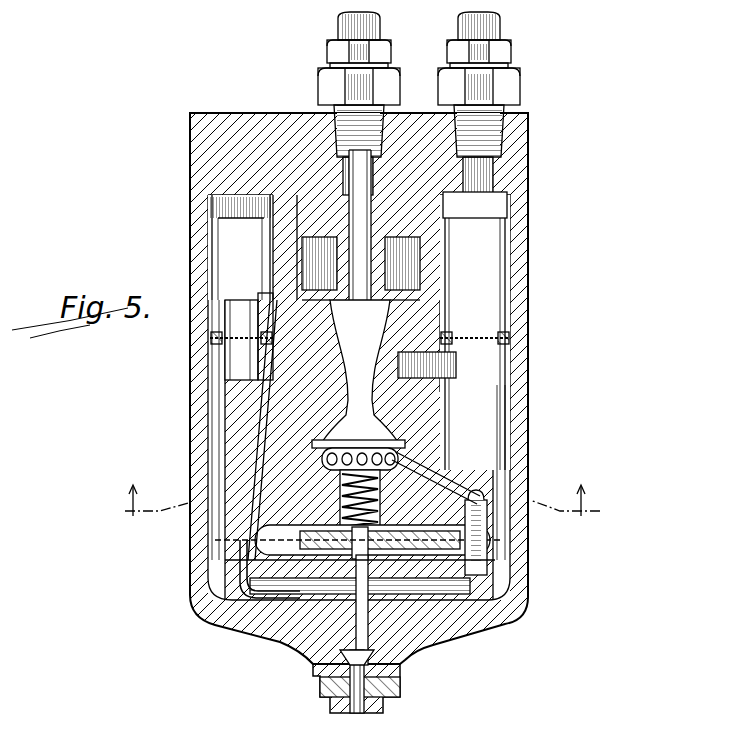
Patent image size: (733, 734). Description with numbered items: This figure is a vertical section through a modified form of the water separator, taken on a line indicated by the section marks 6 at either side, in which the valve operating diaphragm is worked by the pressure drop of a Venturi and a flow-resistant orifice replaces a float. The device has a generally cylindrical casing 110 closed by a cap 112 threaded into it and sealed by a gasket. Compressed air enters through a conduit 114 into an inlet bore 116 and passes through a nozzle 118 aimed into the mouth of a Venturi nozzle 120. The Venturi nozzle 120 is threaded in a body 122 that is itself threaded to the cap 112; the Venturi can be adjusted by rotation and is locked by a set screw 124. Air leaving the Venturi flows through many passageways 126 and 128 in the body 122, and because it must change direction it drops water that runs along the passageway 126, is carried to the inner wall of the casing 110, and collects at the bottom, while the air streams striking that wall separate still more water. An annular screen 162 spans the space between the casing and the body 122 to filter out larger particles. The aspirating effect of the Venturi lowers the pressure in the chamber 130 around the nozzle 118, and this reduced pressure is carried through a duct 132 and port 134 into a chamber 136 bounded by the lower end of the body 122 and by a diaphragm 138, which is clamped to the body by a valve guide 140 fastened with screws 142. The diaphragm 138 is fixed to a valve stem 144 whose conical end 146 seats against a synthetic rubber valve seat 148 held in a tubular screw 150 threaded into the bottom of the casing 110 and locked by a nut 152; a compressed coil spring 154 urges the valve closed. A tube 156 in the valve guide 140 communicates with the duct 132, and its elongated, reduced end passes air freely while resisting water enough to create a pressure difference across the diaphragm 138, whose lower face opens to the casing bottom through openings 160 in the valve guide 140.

The casing 110 is at (528, 357).
The cap 112 is at (530, 122).
The conduit 114 is at (342, 27).
The inlet bore 116 is at (340, 163).
The nozzle 118 is at (446, 209).
The Venturi nozzle 120 is at (410, 318).
The body 122 is at (492, 250).
The set screw 124 is at (458, 355).
The passageway 126 is at (262, 470).
The passageway 128 is at (200, 395).
The chamber 130 is at (318, 265).
The duct 132 is at (225, 352).
The port 134 is at (257, 533).
The chamber 136 is at (232, 558).
The diaphragm 138 is at (472, 552).
The valve guide 140 is at (443, 578).
The screws 142 is at (473, 568).
The valve stem 144 is at (357, 605).
The conical end 146 is at (322, 665).
The valve seat 148 is at (335, 704).
The tubular screw 150 is at (352, 715).
The nut 152 is at (388, 698).
The compressed coil spring 154 is at (386, 444).
The tube 156 is at (300, 640).
The openings 160 is at (228, 623).
The annular screen 162 is at (505, 340).
The section line 6- 6 is at (359, 515).